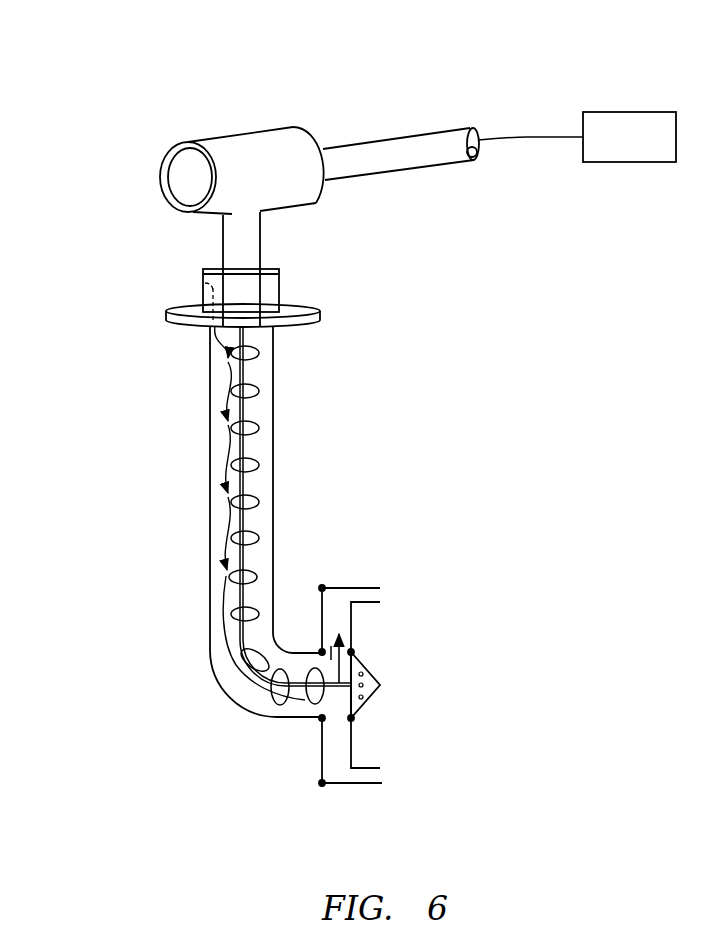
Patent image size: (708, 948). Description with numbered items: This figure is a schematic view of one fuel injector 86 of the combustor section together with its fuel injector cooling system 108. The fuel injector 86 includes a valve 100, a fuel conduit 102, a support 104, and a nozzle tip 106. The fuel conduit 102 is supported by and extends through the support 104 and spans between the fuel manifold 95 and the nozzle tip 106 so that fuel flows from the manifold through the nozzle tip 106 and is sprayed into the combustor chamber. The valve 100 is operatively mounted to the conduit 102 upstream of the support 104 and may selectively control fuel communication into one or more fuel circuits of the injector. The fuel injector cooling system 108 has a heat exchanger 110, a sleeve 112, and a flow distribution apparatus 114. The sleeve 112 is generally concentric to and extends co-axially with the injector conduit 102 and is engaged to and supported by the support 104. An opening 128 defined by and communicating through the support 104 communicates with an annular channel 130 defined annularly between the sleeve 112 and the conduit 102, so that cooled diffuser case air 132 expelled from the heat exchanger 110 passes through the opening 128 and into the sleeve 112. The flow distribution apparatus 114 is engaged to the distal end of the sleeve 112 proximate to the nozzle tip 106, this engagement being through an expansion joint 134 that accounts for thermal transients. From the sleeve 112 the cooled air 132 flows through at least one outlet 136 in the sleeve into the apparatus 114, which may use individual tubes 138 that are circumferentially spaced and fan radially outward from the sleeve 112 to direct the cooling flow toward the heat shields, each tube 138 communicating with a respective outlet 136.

The fuel injector 86 is at (131, 110).
The fuel manifold 95 is at (374, 96).
The valve 100 is at (258, 145).
The fuel conduit 102 is at (258, 241).
The support 104 is at (318, 320).
The nozzle tip 106 is at (367, 703).
The fuel injector cooling system 108 is at (96, 191).
The heat exchanger 110 is at (611, 151).
The sleeve 112 is at (276, 418).
The flow distribution apparatus 114 is at (305, 768).
The opening 128 is at (218, 290).
The annular channel 130 is at (213, 402).
The cooled diffuser case air 132 is at (228, 453).
The expansion joint 134 is at (318, 720).
The outlet 136 is at (345, 652).
The tube 138 is at (370, 592).